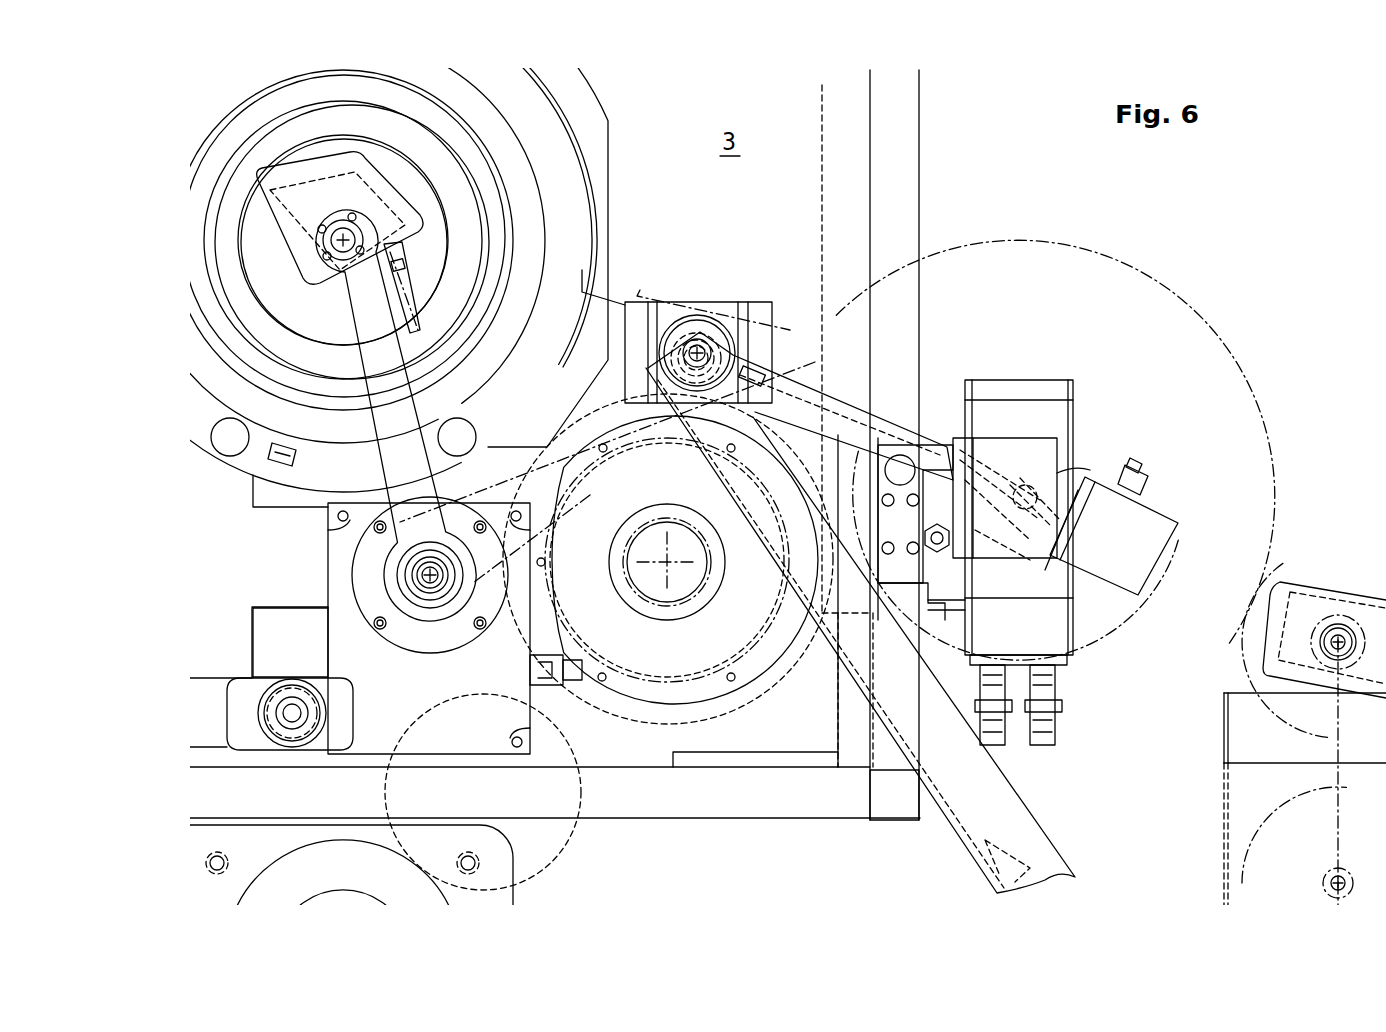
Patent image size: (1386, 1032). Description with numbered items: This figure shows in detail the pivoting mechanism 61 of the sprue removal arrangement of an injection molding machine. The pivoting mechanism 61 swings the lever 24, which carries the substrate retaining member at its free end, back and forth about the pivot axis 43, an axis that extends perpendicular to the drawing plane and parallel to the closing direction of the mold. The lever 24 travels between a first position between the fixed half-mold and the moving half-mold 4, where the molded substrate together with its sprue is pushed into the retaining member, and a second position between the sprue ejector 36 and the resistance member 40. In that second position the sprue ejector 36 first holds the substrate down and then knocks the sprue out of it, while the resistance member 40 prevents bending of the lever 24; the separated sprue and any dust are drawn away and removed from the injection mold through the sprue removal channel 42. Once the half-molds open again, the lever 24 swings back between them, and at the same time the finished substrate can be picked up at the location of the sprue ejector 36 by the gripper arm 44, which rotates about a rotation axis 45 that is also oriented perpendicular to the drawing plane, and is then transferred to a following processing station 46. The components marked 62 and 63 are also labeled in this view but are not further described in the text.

The moving half-mold 4 is at (595, 130).
The lever 24 is at (400, 414).
The sprue ejector 36 is at (732, 303).
The resistance member 40 is at (735, 355).
The sprue removal channel 42 is at (985, 785).
The pivot axis 43 is at (425, 574).
The gripper arm 44 is at (882, 427).
The rotation axis 45 is at (1025, 497).
The following processing station 46 is at (1314, 540).
The pivoting mechanism 61 is at (402, 698).
The holder block 62 is at (1050, 415).
The bearing housing 63 is at (679, 577).